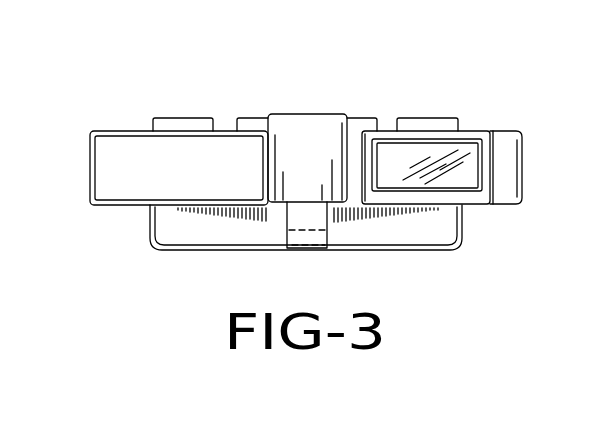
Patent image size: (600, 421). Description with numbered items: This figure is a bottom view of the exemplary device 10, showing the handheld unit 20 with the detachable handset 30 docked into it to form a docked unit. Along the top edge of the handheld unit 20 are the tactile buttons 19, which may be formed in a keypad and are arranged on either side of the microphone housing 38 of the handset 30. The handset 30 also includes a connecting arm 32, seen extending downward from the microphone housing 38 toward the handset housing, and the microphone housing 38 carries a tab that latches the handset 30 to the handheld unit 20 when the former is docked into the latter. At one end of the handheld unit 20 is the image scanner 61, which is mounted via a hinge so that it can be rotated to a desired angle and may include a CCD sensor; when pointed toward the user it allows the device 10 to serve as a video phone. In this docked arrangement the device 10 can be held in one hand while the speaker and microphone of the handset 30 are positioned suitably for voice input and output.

The device 10 is at (84, 110).
The tactile buttons 19 is at (257, 122).
The handheld unit 20 is at (497, 130).
The detachable handset 30 is at (430, 252).
The connecting arm 32 is at (305, 240).
The microphone housing 38 is at (310, 150).
The image scanner 61 is at (470, 166).